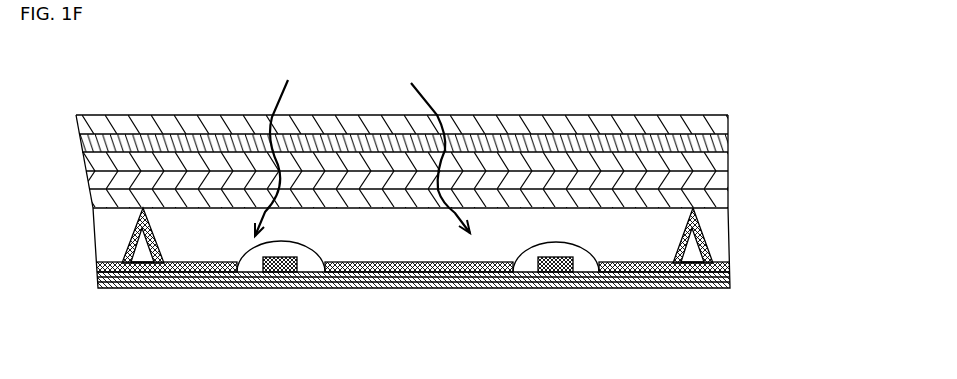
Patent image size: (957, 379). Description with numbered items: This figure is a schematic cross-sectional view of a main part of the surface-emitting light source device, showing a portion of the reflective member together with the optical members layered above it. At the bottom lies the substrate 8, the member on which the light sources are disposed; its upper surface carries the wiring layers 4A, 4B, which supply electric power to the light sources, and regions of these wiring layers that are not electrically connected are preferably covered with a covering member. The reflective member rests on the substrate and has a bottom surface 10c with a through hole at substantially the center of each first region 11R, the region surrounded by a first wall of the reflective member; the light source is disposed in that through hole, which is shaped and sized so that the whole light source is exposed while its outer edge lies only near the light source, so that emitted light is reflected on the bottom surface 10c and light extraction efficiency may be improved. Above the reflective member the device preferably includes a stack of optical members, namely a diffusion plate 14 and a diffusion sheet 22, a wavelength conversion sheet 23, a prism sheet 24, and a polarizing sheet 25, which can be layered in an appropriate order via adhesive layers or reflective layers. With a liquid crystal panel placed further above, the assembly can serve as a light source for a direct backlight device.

The first region 11R is at (362, 141).
The diffusion plate 14 is at (538, 177).
The diffusion sheet 22 is at (596, 156).
The wavelength conversion sheet 23 is at (600, 140).
The prism sheet 24 is at (655, 135).
The polarizing sheet 25 is at (683, 123).
The wiring layer 4A is at (222, 287).
The wiring layer 4B is at (325, 287).
The substrate 8 is at (597, 282).
The bottom surface 10c is at (722, 255).